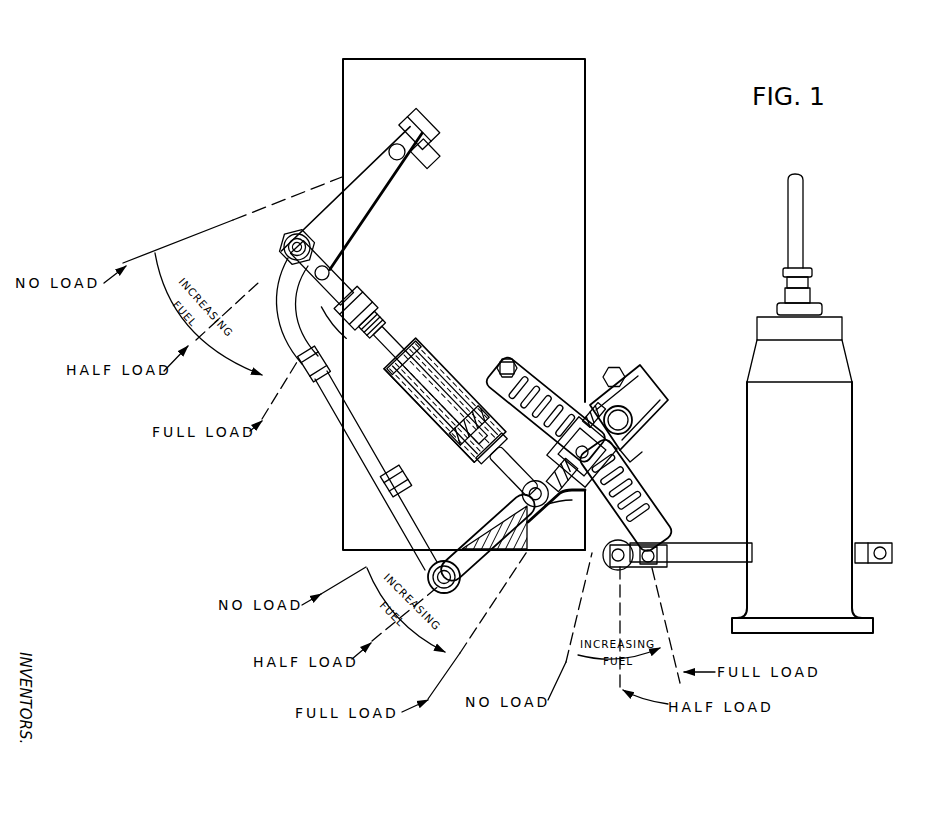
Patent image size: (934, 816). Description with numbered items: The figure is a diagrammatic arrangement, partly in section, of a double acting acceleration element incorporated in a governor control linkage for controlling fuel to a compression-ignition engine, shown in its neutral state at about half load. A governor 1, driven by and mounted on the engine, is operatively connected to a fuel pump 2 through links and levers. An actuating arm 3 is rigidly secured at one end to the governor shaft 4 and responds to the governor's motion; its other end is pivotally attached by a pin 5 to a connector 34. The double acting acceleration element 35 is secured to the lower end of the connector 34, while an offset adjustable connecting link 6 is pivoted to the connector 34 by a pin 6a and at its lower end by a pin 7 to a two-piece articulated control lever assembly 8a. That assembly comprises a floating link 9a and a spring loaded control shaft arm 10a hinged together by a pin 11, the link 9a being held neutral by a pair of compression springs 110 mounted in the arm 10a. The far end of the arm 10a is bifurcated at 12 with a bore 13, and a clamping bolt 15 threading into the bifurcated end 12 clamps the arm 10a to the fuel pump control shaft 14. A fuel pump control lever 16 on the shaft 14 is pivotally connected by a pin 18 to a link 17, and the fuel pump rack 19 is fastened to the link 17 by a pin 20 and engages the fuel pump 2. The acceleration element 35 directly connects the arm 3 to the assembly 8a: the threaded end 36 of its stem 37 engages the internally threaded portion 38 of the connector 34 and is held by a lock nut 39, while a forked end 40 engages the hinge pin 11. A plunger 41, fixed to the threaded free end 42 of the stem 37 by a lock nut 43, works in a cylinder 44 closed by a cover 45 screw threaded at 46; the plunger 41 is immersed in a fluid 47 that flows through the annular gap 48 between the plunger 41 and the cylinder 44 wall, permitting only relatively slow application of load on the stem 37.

The governor 1 is at (587, 212).
The fuel pump 2 is at (853, 420).
The actuating arm 3 is at (400, 172).
The governor shaft 4 is at (391, 146).
The pin 5 is at (281, 247).
The offset adjustable connecting link 6 is at (273, 338).
The pin 6a is at (345, 241).
The pin 7 is at (446, 586).
The two-piece articulated control lever assembly 8a is at (501, 558).
The floating link 9a is at (496, 518).
The spring loaded control shaft arm 10a is at (536, 524).
The pin 11 is at (530, 549).
The bifurcated end 12 is at (658, 394).
The bore 13 is at (597, 403).
The fuel pump control shaft 14 is at (640, 428).
The clamping bolt 15 is at (626, 363).
The fuel pump control lever 16 is at (636, 456).
The link 17 is at (629, 568).
The pin 18 is at (613, 567).
The fuel pump rack 19 is at (715, 557).
The pin 20 is at (654, 564).
The connector 34 is at (372, 213).
The double acting acceleration element 35 is at (492, 346).
The threaded end 36 is at (346, 292).
The stem 37 is at (393, 324).
The internally threaded portion 38 is at (343, 307).
The lock nut 39 is at (392, 334).
The forked end 40 is at (516, 482).
The plunger 41 is at (430, 432).
The threaded free end 42 is at (455, 456).
The lock nut 43 is at (487, 370).
The cylinder 44 is at (413, 418).
The cover 45 is at (388, 364).
The screw threaded attachment 46 is at (437, 326).
The fluid 47 is at (470, 372).
The annular gap 48 is at (470, 356).
The compression springs 110 is at (527, 375).